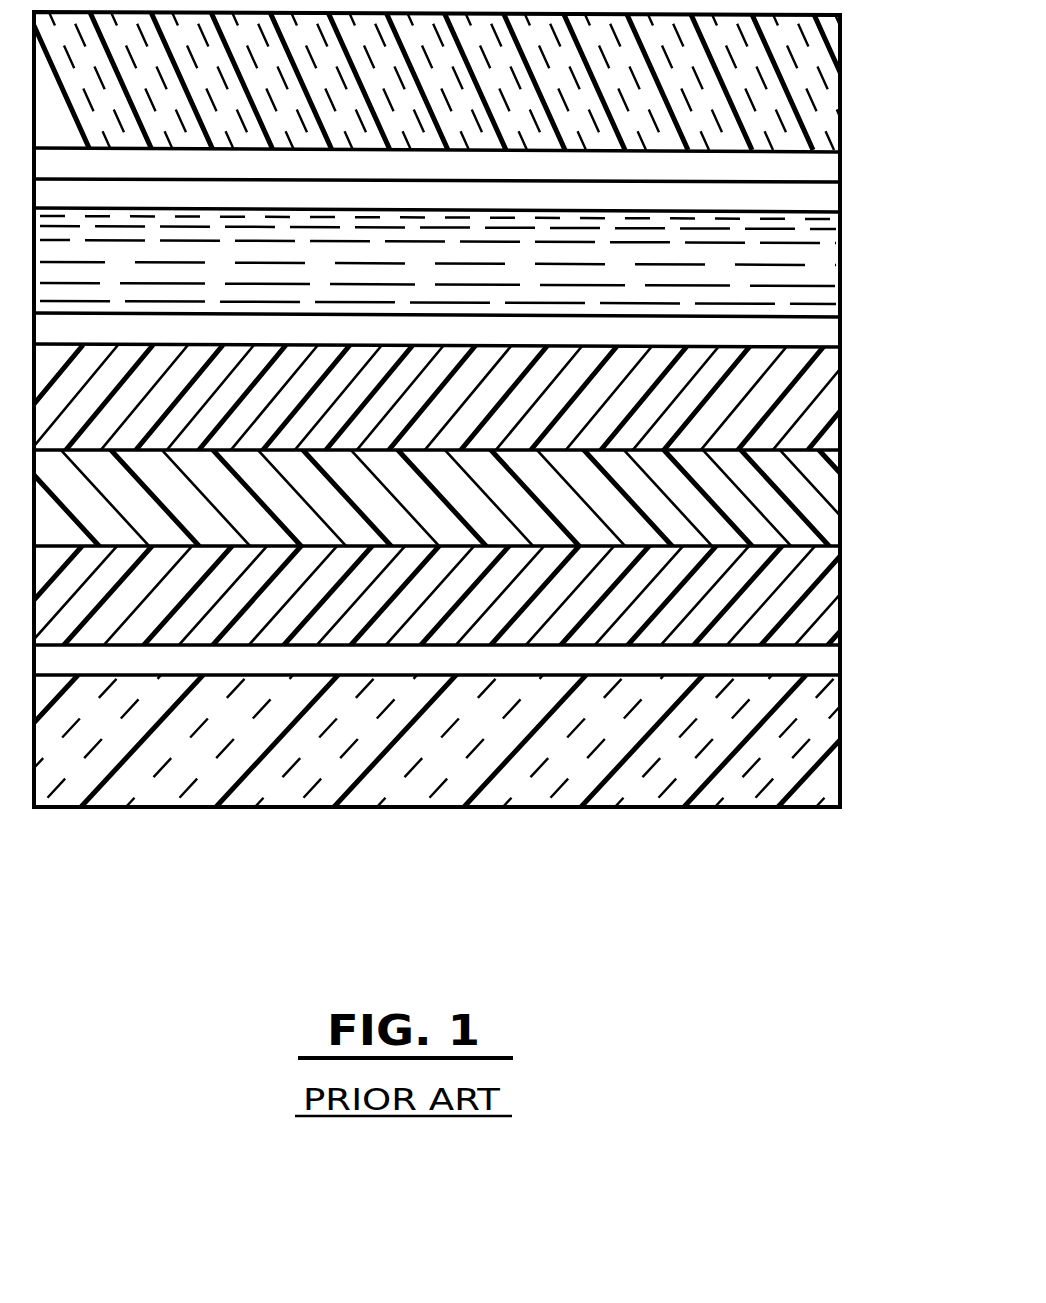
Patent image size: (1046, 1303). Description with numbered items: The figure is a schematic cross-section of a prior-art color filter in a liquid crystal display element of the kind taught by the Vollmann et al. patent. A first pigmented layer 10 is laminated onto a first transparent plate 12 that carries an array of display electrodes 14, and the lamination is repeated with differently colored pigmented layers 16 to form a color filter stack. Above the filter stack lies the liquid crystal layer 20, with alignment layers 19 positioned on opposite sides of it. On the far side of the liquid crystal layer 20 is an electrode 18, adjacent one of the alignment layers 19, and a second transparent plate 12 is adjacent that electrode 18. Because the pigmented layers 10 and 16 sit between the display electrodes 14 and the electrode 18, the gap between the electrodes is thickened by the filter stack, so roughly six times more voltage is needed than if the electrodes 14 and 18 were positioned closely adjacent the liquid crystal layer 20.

The first pigmented layer 10 is at (778, 600).
The transparent plate 12 is at (813, 111).
The display electrodes 14 is at (807, 663).
The differently colored pigmented layers 16 is at (800, 407).
The electrode 18 is at (807, 167).
The alignment layer 19 is at (797, 197).
The liquid crystal layer 20 is at (807, 273).